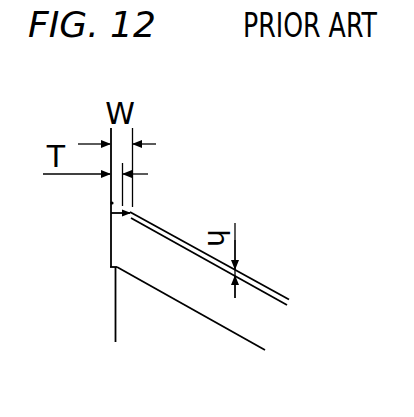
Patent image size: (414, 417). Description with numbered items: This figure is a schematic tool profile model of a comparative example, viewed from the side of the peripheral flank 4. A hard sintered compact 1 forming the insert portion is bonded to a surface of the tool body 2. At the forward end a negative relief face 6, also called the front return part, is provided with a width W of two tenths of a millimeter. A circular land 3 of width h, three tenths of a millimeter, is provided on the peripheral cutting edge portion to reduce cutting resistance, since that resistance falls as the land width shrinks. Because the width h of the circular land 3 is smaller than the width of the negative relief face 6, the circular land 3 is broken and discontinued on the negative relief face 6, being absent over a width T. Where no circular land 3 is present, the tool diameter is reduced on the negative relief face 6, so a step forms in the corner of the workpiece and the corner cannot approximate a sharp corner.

The hard sintered compact 1 is at (273, 288).
The tool body 2 is at (127, 309).
The circular land 3 is at (178, 237).
The peripheral flank 4 is at (202, 303).
The negative relief face 6 is at (123, 203).